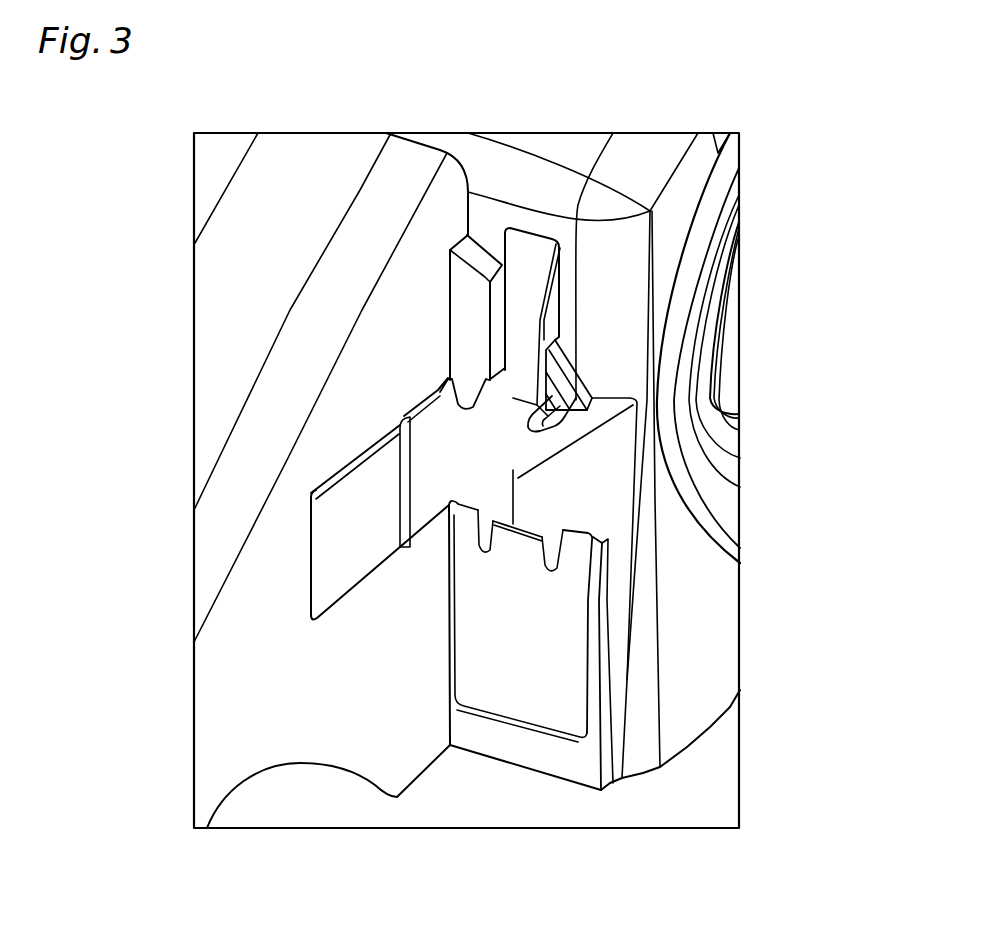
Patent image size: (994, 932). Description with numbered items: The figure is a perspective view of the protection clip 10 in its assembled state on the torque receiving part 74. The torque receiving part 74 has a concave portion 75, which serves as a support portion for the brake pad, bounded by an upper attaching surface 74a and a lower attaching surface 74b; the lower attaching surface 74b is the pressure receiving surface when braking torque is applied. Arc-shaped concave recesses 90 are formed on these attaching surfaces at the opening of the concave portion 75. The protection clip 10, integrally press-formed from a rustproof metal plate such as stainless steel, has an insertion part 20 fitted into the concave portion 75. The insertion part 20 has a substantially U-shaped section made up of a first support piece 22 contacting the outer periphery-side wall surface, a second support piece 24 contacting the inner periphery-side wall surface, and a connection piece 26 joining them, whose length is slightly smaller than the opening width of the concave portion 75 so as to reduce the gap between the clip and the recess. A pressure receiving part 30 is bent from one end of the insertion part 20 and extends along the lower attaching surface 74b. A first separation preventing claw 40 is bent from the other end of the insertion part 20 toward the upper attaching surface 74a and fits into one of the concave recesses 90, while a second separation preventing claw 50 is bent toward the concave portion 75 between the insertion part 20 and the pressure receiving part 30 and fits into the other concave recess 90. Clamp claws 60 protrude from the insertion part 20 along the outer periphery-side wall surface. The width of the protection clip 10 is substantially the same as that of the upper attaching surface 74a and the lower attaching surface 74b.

The protection clip 10 is at (401, 402).
The insertion part 20 is at (392, 512).
The first support piece 22 is at (510, 445).
The second support piece 24 is at (447, 513).
The connection piece 26 is at (410, 477).
The pressure receiving part 30 is at (544, 703).
The first separation preventing claw 40 is at (513, 398).
The second separation preventing claw 50 is at (515, 548).
The clamp claws 60 is at (464, 325).
The torque receiving part 74 is at (232, 714).
The upper attaching surface 74a is at (447, 382).
The lower attaching surface 74b is at (502, 745).
The concave portion 75 is at (333, 573).
The concave recesses 90 is at (530, 283).